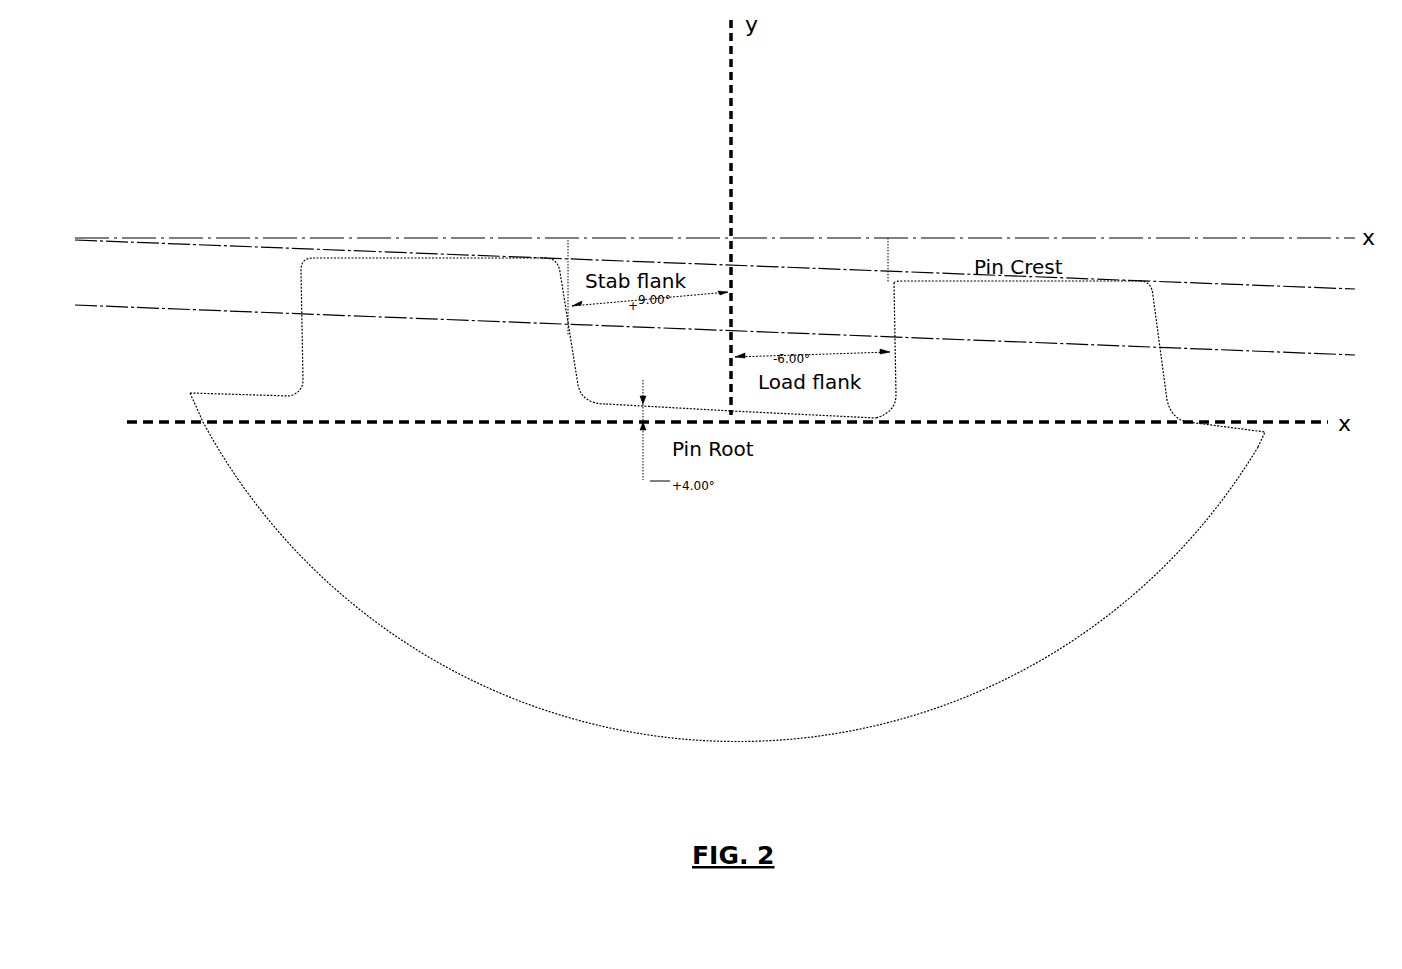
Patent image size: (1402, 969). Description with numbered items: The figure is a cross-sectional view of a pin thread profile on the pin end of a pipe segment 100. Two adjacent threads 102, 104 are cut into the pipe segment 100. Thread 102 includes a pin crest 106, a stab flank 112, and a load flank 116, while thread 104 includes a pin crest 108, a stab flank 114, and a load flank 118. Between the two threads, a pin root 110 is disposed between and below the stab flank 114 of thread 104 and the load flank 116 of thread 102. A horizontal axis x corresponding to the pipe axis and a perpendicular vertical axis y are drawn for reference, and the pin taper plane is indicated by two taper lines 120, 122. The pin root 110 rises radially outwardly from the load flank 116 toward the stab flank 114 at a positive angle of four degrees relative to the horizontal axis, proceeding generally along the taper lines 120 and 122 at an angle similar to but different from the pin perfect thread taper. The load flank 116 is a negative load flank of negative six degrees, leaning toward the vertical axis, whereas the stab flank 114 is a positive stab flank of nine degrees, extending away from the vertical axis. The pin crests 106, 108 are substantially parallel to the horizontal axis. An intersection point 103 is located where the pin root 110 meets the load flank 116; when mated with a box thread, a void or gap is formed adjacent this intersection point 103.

The pipe segment 100 is at (988, 678).
The thread 102 is at (1048, 372).
The intersection point 103 is at (882, 415).
The thread 104 is at (493, 350).
The pin crest 106 is at (920, 282).
The pin crest 108 is at (330, 258).
The pin root 110 is at (623, 402).
The stab flank 112 is at (1152, 312).
The stab flank 114 is at (560, 282).
The load flank 116 is at (891, 320).
The load flank 118 is at (293, 282).
The taper line 120 is at (738, 336).
The taper line 122 is at (738, 271).